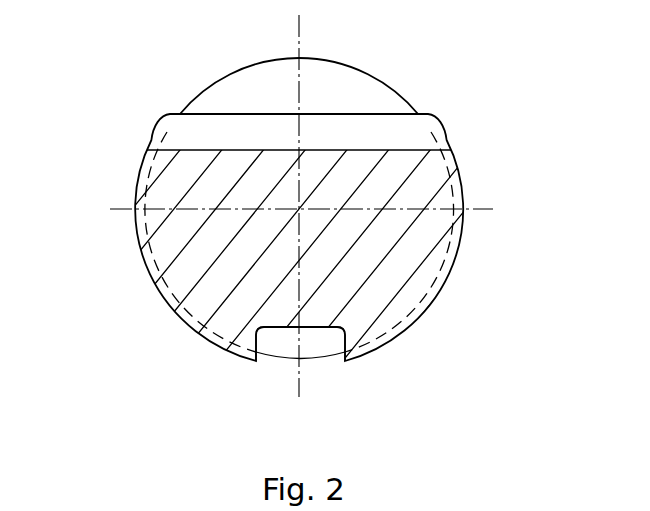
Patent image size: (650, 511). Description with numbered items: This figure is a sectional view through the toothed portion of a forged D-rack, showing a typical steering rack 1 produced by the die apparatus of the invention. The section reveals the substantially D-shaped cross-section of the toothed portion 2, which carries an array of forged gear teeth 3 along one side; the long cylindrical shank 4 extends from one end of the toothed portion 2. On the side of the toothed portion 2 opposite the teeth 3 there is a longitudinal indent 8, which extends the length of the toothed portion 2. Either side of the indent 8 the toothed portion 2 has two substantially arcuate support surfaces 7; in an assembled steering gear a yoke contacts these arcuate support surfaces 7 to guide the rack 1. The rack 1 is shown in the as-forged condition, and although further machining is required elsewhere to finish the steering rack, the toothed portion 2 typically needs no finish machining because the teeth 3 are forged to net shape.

The steering rack 1 is at (474, 115).
The toothed portion 2 is at (173, 188).
The forged gear teeth 3 is at (183, 133).
The long cylindrical shank 4 is at (262, 66).
The arcuate support surfaces 7 is at (203, 340).
The longitudinal indent 8 is at (315, 328).